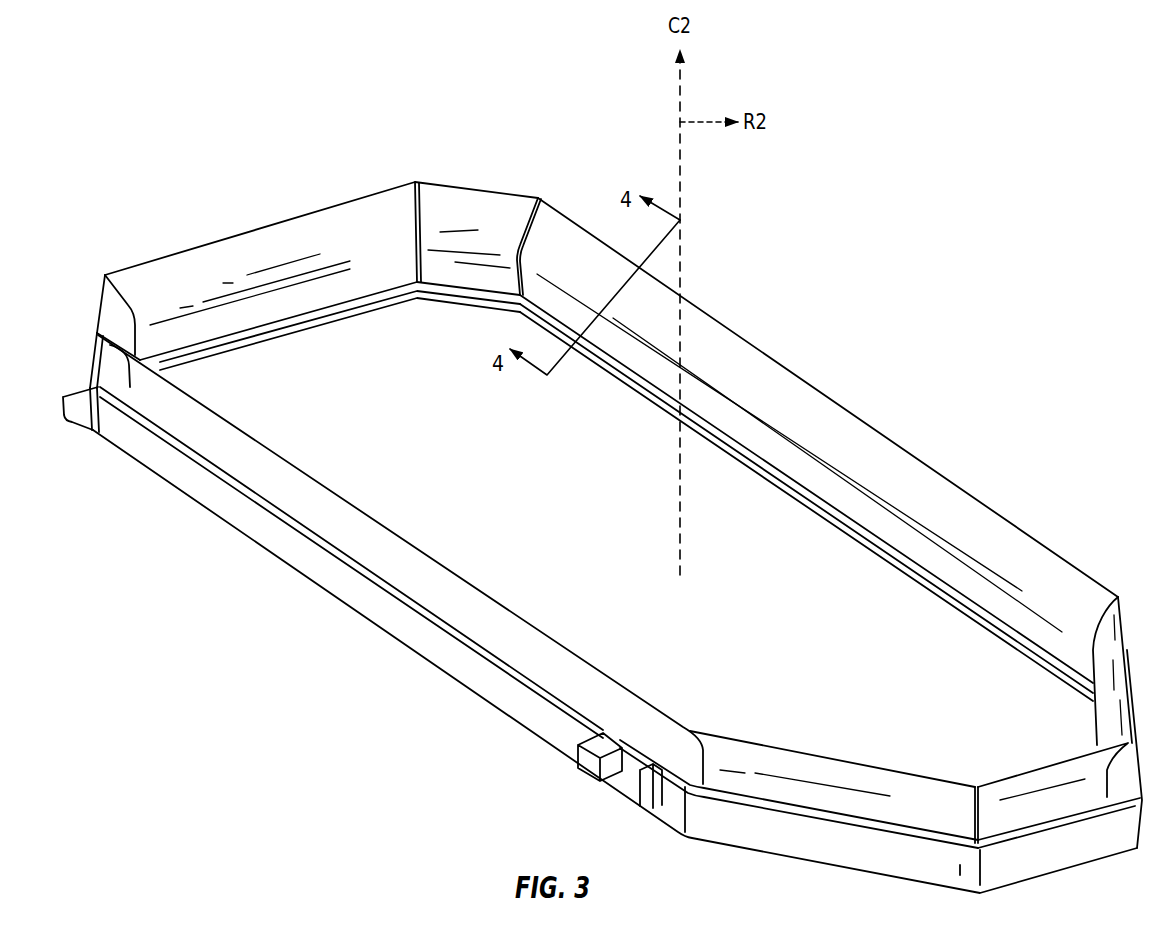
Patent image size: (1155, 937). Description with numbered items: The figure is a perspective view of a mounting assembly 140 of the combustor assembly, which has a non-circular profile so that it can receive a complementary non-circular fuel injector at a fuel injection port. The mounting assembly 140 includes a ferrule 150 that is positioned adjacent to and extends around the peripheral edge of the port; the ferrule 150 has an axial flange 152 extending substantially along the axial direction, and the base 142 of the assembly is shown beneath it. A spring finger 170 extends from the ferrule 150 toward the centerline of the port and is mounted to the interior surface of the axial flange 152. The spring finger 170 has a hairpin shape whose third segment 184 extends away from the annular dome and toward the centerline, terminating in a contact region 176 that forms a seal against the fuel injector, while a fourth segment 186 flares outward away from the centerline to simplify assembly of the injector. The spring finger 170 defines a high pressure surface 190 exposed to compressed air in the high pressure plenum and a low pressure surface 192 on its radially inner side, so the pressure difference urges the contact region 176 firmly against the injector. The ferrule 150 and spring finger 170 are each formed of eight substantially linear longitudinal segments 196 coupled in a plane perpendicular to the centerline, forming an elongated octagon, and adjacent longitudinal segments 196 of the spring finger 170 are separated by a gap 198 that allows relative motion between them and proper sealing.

The mounting assembly 140 is at (882, 194).
The base 142 is at (745, 852).
The ferrule 150 is at (457, 684).
The axial flange 152 is at (397, 597).
The spring finger 170 is at (330, 504).
The contact region 176 is at (799, 438).
The third segment 184 is at (258, 306).
The fourth segment 186 is at (158, 265).
The high pressure surface 190 is at (205, 430).
The low pressure surface 192 is at (922, 556).
The longitudinal segments 196 is at (318, 222).
The gap 198 is at (415, 176).